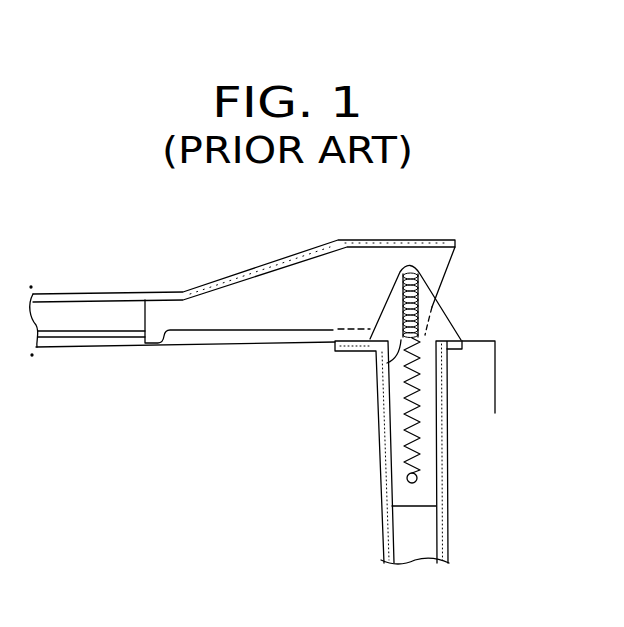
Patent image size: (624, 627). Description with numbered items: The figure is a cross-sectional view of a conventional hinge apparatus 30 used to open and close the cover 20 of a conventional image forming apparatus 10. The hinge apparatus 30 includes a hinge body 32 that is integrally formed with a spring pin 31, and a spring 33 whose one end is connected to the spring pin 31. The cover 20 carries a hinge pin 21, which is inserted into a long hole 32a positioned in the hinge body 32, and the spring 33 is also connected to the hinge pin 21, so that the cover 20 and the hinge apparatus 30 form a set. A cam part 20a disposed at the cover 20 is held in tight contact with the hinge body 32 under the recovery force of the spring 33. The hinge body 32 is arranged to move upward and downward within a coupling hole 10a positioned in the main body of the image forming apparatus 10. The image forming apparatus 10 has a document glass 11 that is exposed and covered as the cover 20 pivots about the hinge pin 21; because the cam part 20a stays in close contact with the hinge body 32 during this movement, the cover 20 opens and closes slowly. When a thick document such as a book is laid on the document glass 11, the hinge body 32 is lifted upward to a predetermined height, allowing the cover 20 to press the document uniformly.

The image forming apparatus 10 is at (487, 380).
The coupling hole 10a is at (416, 540).
The document glass 11 is at (57, 344).
The cover 20 is at (226, 276).
The cam part 20a is at (370, 363).
The hinge pin 21 is at (423, 277).
The hinge apparatus 30 is at (482, 326).
The spring pin 31 is at (418, 478).
The hinge body 32 is at (449, 320).
The long hole 32a is at (423, 274).
The spring 33 is at (417, 413).